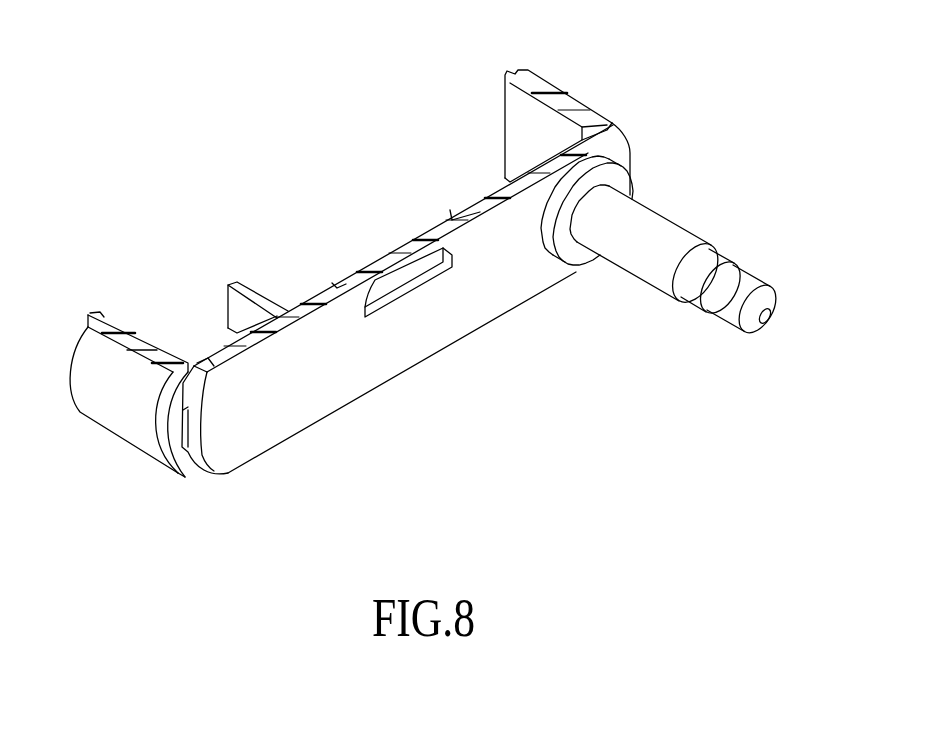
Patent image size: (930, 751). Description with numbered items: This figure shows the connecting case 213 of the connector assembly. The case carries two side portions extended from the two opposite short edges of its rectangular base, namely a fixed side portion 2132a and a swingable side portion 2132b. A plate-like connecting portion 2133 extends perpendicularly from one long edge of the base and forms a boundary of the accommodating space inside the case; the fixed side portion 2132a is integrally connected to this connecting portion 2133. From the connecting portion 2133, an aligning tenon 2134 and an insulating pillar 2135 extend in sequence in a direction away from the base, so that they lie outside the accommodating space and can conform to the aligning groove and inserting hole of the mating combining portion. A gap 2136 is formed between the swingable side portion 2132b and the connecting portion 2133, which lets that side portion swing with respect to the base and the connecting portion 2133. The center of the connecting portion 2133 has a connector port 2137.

The connecting case 213 is at (97, 41).
The fixed side portion 2132a is at (522, 128).
The swingable side portion 2132b is at (117, 408).
The connecting portion 2133 is at (318, 380).
The aligning tenon 2134 is at (576, 256).
The insulating pillar 2135 is at (670, 243).
The gap 2136 is at (197, 358).
The connector port 2137 is at (415, 284).